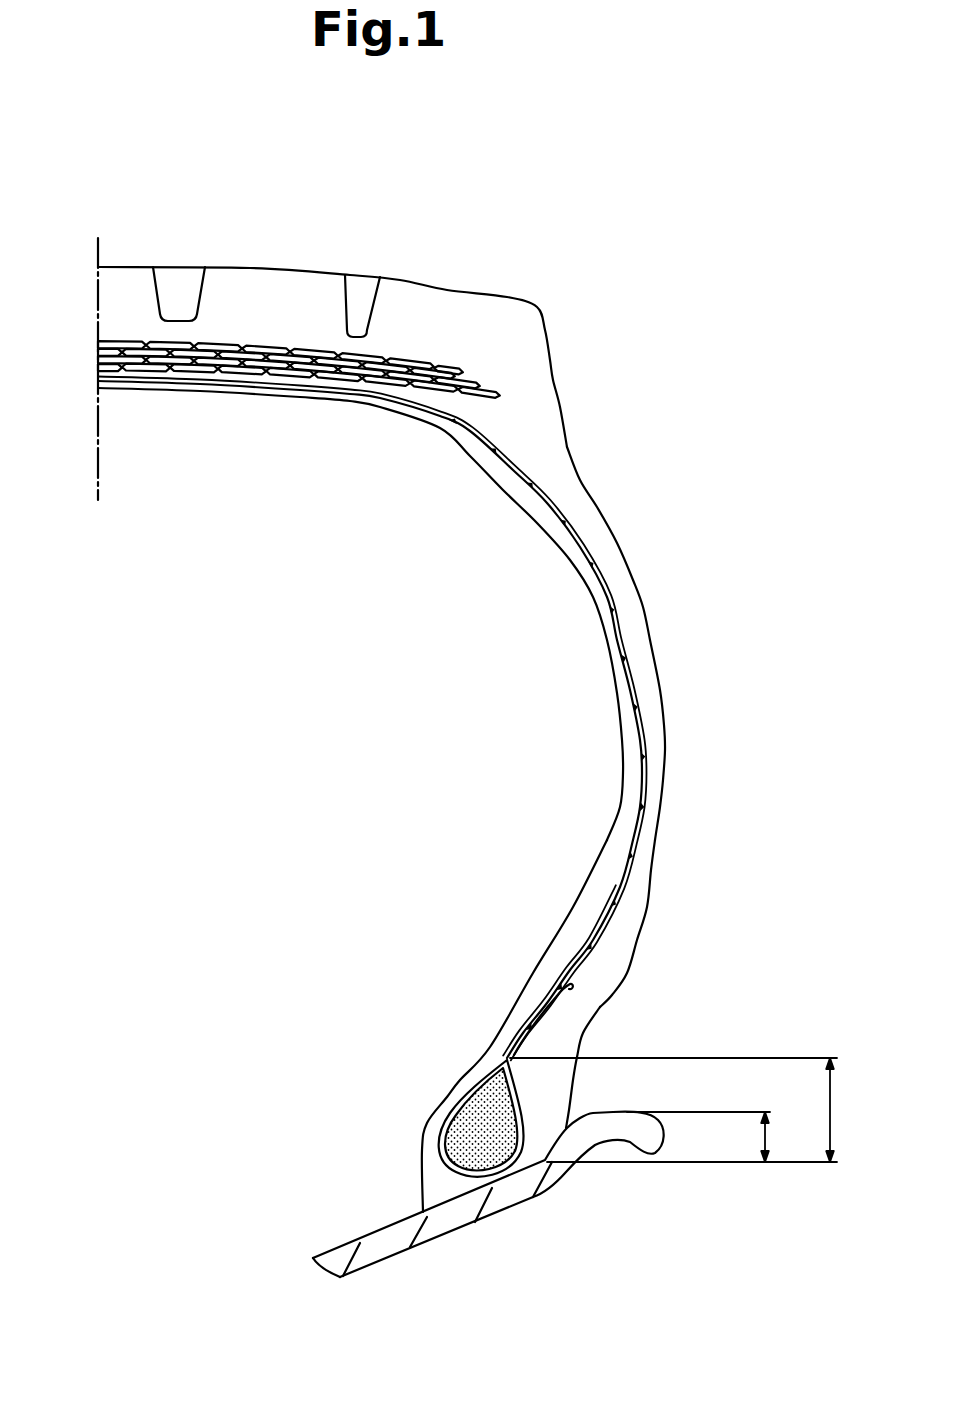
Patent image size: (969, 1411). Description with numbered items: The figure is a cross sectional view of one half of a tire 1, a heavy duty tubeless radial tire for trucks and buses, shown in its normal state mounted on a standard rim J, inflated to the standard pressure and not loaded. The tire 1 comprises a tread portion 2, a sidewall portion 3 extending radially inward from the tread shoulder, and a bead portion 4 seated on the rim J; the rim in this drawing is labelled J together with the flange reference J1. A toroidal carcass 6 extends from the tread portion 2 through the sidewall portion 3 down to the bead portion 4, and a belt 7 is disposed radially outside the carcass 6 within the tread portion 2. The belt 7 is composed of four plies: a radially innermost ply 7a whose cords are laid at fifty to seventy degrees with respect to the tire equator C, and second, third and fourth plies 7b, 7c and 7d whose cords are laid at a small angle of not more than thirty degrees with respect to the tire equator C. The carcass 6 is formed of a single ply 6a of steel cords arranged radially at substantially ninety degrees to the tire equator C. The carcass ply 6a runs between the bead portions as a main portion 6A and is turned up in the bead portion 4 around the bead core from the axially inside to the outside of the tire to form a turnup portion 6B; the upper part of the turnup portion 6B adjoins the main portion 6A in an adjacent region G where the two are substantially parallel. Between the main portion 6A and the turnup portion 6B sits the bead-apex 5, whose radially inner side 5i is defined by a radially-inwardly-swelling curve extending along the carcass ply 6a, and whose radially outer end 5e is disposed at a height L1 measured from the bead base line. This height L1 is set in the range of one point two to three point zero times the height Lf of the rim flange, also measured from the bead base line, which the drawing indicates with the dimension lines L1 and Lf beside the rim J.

The tire 1 is at (418, 757).
The tread portion 2 is at (288, 263).
The sidewall portion 3 is at (663, 615).
The bead portion 4 is at (425, 1083).
The bead-apex 5 is at (438, 1156).
The radially outer end of the bead-apex 5e is at (487, 1053).
The radially inner side of the bead-apex 5i is at (477, 1172).
The carcass 6 is at (372, 719).
The carcass ply 6a is at (372, 719).
The main portion 6A is at (627, 833).
The turnup portion 6B is at (536, 970).
The belt 7 is at (299, 434).
The radially innermost belt ply 7a is at (148, 485).
The second belt ply 7b is at (308, 368).
The third belt ply 7c is at (258, 354).
The fourth belt ply 7d is at (224, 343).
The tire equator C is at (100, 253).
The adjacent region G is at (653, 893).
The standard rim J is at (437, 1194).
The rim flange J1 is at (313, 1257).
The height of the radially outer end of the bead-apex L1 is at (835, 1112).
The height of the rim flange Lf is at (765, 1135).